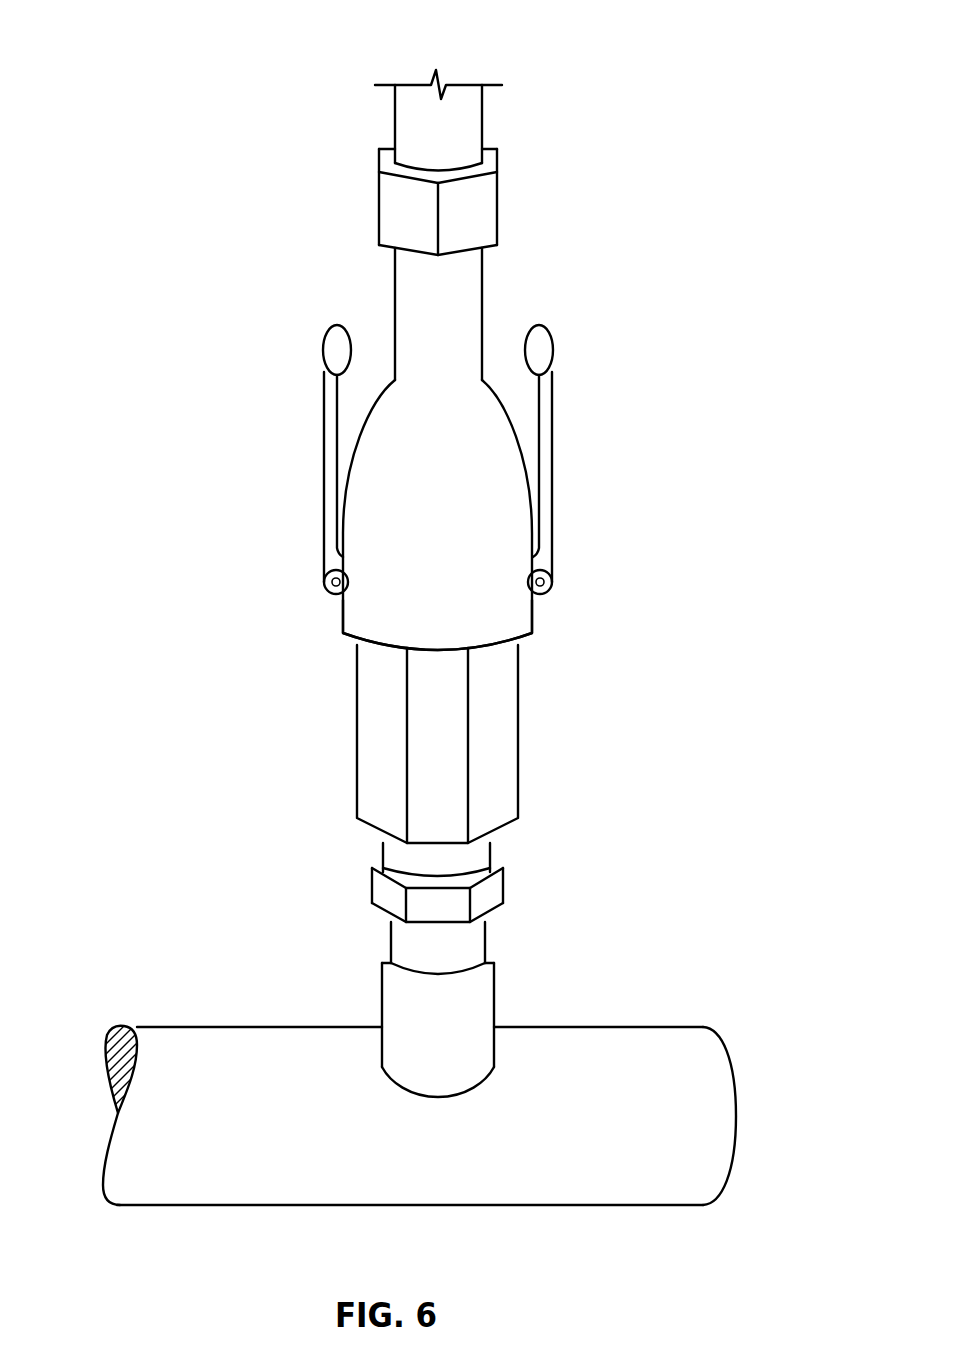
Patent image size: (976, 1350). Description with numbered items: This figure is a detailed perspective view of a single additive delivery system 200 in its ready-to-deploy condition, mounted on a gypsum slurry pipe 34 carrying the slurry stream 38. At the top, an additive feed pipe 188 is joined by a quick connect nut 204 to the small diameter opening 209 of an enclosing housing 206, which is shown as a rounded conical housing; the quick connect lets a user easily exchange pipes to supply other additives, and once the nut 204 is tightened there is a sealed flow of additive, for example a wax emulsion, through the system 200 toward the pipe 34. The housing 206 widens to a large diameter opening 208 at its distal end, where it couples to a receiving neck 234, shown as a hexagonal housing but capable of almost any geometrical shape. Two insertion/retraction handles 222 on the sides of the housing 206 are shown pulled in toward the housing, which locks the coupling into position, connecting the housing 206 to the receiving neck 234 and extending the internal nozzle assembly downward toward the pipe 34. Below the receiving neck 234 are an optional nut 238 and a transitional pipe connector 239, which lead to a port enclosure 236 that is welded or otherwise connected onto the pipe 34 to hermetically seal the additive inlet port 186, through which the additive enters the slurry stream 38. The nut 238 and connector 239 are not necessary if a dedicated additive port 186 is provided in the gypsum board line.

The additive delivery system 200 is at (220, 38).
The additive feed pipe 188 is at (405, 133).
The quick connect nut 204 is at (483, 212).
The small diameter opening 209 is at (465, 278).
The insertion/retraction handles 222 is at (332, 352).
The enclosing housing 206 is at (513, 543).
The large diameter opening 208 is at (523, 640).
The receiving neck 234 is at (455, 810).
The optional nut 238 is at (493, 892).
The transitional pipe connector 239 is at (473, 952).
The port enclosure 236 is at (405, 1051).
The additive inlet port 186 is at (433, 1102).
The gypsum slurry pipe 34 is at (385, 1118).
The slurry stream 38 is at (113, 1058).